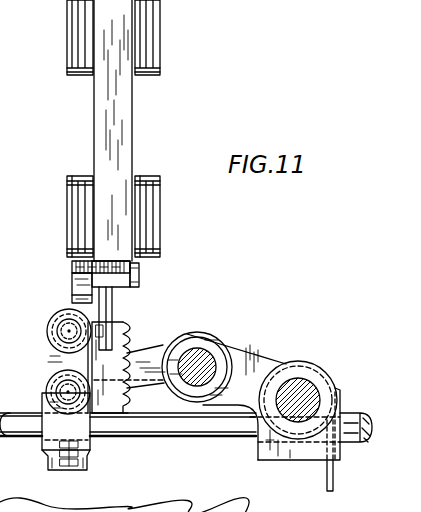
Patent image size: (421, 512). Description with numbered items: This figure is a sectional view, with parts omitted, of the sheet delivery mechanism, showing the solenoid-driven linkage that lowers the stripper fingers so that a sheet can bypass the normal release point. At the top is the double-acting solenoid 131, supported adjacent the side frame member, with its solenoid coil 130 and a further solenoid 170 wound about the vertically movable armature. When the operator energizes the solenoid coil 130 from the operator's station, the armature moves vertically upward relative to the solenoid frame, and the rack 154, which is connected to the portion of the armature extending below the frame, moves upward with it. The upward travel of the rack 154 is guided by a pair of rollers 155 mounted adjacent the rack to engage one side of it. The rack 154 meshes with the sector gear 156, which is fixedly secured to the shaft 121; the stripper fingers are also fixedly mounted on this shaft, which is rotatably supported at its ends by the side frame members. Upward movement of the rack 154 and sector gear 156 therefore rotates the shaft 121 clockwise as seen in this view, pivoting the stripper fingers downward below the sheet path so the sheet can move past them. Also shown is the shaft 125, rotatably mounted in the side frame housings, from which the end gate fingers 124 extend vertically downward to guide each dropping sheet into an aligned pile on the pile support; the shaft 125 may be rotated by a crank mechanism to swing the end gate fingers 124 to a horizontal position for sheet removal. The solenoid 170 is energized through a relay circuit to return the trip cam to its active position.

The solenoid coil 130 is at (152, 35).
The double-acting solenoid 131 is at (135, 129).
The solenoid 170 is at (150, 220).
The sector gear 156 is at (145, 351).
The rollers 155 is at (50, 338).
The rack 154 is at (112, 422).
The shaft 121 is at (203, 363).
The shaft 125 is at (304, 380).
The end gate fingers 124 is at (327, 478).